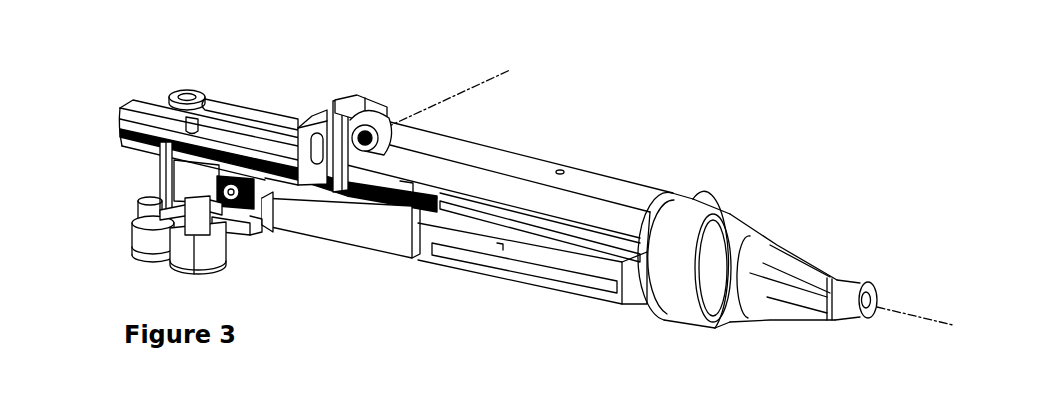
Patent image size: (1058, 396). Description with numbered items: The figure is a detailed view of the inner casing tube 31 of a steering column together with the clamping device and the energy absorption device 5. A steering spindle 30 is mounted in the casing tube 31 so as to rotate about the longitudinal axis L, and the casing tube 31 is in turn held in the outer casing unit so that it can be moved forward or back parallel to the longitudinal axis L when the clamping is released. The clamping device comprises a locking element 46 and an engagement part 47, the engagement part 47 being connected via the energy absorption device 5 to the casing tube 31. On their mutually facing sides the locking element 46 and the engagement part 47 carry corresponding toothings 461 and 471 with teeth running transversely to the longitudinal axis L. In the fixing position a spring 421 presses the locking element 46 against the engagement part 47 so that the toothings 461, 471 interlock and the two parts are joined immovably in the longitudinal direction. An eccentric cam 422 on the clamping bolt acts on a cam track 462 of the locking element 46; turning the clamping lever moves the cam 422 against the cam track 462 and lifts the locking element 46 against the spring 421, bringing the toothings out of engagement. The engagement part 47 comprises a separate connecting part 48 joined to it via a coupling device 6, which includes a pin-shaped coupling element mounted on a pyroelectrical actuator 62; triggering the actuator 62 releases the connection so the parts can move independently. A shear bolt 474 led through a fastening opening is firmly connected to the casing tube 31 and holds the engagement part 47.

The energy absorption device 5 is at (453, 257).
The coupling device 6 is at (147, 273).
The steering spindle 30 is at (740, 260).
The inner casing tube 31 is at (583, 185).
The locking element 46 is at (300, 125).
The engagement part 47 is at (363, 217).
The connecting part 48 is at (195, 178).
The pyroelectrical actuator 62 is at (205, 258).
The spring 421 is at (243, 112).
The eccentric cam 422 is at (383, 135).
The toothing 461 is at (380, 163).
The cam track 462 is at (346, 100).
The toothing 471 is at (300, 190).
The shear bolt 474 is at (130, 227).
The longitudinal axis L is at (932, 317).